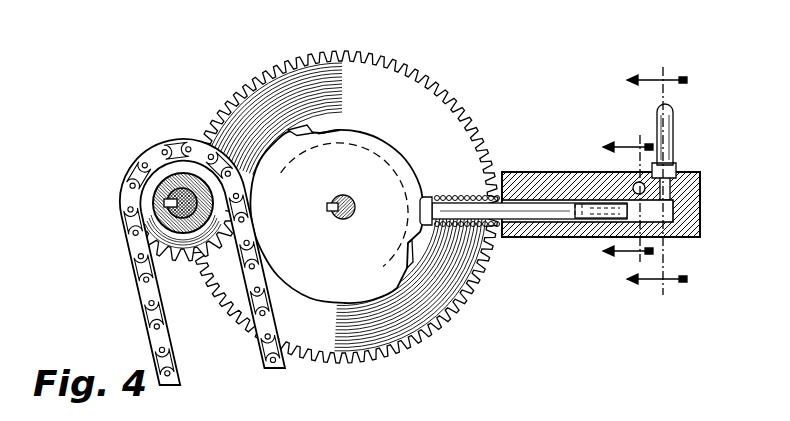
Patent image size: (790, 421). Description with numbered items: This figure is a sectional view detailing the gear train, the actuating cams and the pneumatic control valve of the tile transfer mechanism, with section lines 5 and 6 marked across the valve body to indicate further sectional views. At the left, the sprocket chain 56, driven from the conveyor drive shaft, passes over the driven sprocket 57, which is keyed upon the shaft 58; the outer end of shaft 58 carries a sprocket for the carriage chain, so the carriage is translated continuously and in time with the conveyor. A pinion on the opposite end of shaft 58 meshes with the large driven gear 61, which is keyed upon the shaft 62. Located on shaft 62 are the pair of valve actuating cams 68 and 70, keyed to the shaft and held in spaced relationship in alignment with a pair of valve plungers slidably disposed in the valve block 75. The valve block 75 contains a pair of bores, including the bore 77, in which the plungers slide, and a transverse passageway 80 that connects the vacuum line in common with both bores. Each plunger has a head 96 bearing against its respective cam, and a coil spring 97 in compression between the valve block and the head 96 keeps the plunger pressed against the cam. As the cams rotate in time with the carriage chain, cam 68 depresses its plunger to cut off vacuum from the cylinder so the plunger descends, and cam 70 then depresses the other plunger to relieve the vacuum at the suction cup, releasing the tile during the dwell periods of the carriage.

The driven gear 61 is at (421, 74).
The shaft 62 is at (346, 199).
The valve actuating cam 68 is at (309, 128).
The valve actuating cam 70 is at (323, 132).
The head 96 is at (427, 196).
The coil spring 97 is at (453, 198).
The transverse passageway 80 is at (632, 184).
The valve block 75 is at (699, 184).
The bore 77 is at (668, 216).
The shaft 58 is at (177, 192).
The sprocket chain 56 is at (138, 231).
The driven sprocket 57 is at (163, 250).
The section line 5- 5 is at (628, 199).
The section line 6- 6 is at (657, 181).